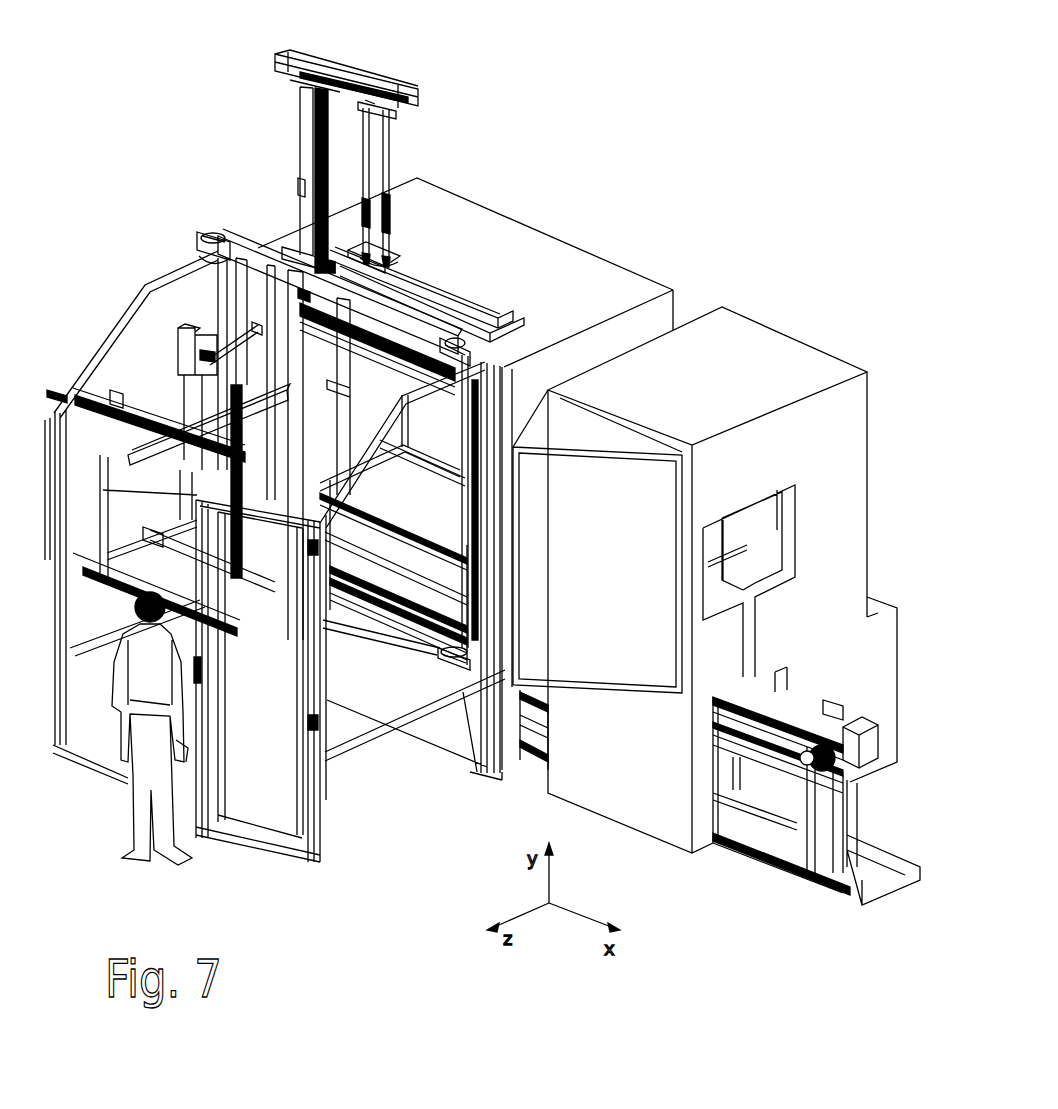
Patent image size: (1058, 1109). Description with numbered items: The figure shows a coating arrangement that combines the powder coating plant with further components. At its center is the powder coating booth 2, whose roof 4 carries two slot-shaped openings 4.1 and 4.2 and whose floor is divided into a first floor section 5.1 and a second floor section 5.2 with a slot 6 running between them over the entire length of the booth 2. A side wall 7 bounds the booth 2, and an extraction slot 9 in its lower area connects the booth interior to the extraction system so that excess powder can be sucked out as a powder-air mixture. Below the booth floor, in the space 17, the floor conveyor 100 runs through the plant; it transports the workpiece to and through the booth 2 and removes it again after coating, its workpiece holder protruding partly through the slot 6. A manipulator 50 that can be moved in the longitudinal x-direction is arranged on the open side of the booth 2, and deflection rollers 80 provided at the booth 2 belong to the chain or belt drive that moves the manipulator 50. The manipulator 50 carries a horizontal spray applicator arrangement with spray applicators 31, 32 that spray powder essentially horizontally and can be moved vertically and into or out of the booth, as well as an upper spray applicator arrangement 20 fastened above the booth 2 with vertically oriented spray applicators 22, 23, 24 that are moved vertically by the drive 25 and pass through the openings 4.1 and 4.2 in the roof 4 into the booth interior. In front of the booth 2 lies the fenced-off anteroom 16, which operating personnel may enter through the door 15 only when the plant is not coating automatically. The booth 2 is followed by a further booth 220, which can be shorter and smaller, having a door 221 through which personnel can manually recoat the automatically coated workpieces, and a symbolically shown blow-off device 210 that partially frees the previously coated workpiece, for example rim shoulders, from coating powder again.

The powder coating booth 2 is at (585, 228).
The roof 4 is at (480, 226).
The slot-shaped opening 4.1 is at (468, 295).
The slot-shaped opening 4.2 is at (490, 323).
The first floor section 5.1 is at (413, 511).
The second floor section 5.2 is at (443, 574).
The slot 6 is at (369, 516).
The side wall 7 is at (401, 441).
The extraction slot 9 is at (428, 458).
The door 15 is at (295, 808).
The anteroom 16 is at (138, 357).
The space 17 is at (780, 681).
The upper spray applicator arrangement 20 is at (276, 143).
The spray applicator 22 is at (402, 256).
The spray applicator 23 is at (300, 216).
The spray applicator 24 is at (372, 266).
The drive 25 is at (297, 55).
The spray applicator 31 is at (240, 344).
The spray applicator 32 is at (335, 403).
The manipulator 50 is at (228, 300).
The deflection rollers 80 is at (205, 245).
The floor conveyor 100 is at (885, 803).
The blow-off device 210 is at (746, 528).
The further booth 220 is at (783, 322).
The door 221 is at (548, 556).